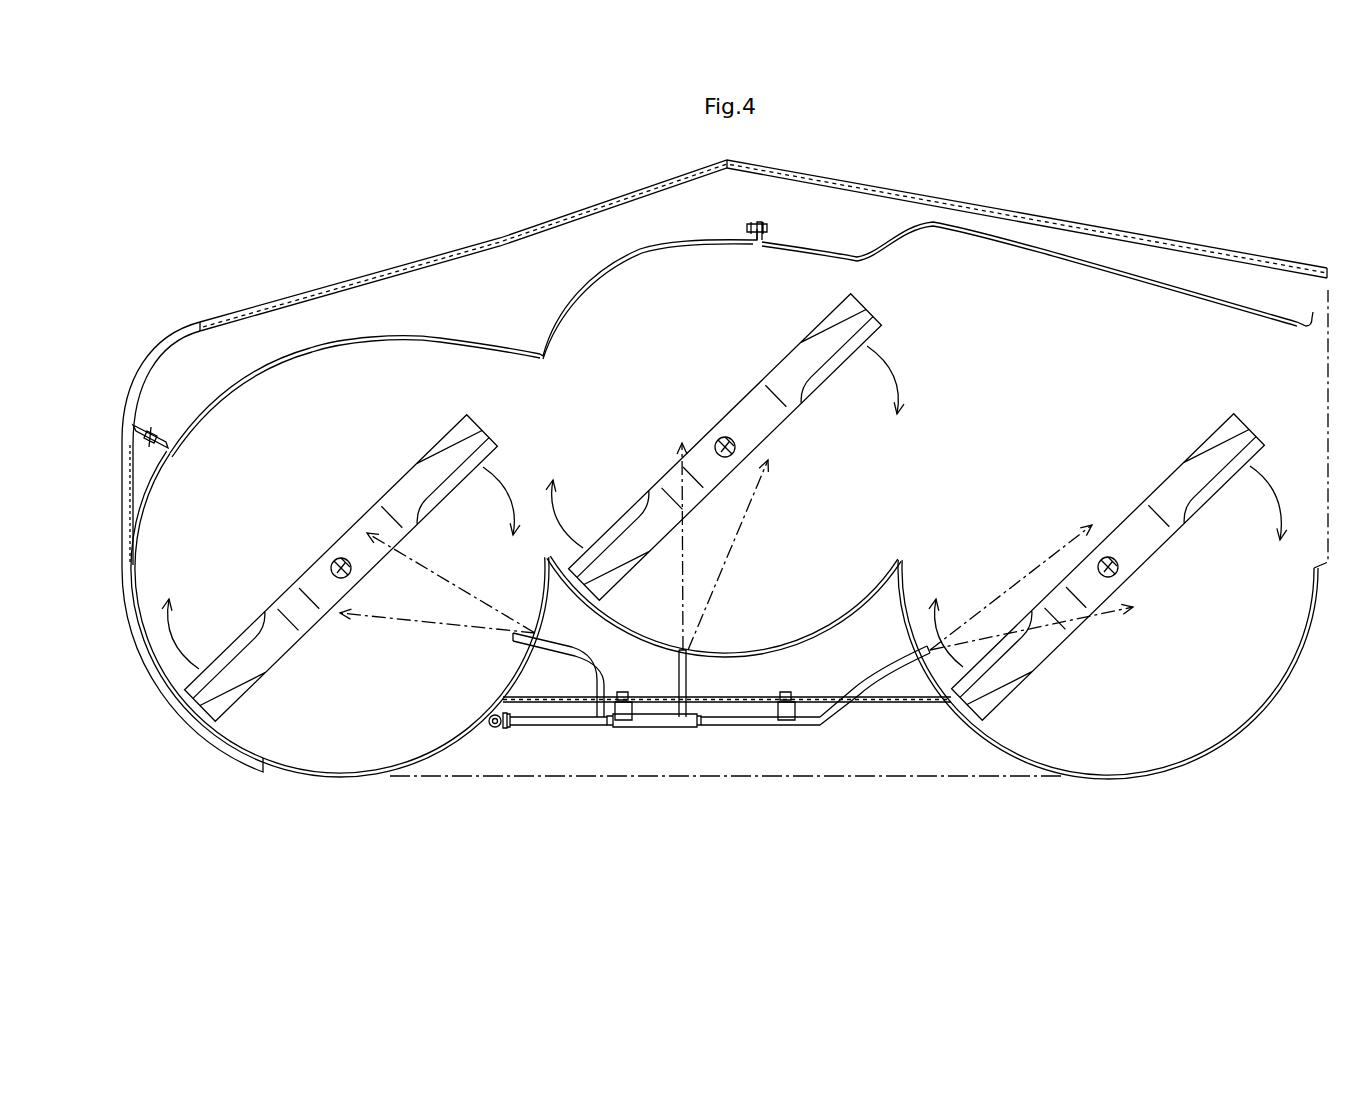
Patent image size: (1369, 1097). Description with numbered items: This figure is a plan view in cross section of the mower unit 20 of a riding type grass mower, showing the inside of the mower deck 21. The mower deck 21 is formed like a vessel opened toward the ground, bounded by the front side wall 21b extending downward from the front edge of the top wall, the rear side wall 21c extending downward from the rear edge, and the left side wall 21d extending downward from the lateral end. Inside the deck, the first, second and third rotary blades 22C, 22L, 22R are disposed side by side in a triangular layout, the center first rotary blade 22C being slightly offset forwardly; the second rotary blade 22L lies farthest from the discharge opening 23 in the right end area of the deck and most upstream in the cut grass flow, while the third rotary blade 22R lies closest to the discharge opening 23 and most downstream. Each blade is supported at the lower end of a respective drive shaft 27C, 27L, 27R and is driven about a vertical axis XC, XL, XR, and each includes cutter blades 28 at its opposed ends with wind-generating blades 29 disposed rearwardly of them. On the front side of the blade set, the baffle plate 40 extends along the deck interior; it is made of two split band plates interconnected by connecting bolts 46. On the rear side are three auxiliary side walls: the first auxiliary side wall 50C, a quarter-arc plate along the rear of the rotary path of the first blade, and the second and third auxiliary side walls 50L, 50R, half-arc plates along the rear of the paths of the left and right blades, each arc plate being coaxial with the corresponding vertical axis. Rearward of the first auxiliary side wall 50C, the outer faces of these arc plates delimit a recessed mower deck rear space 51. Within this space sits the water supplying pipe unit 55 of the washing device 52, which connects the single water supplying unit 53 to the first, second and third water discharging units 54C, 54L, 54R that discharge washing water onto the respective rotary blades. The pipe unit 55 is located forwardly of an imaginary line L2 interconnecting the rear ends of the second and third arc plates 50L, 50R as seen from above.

The mower unit 20 is at (360, 212).
The mower deck 21 is at (725, 459).
The front side wall 21b is at (608, 205).
The rear side wall 21c is at (932, 705).
The left side wall 21d is at (137, 545).
The second rotary blade 22L is at (280, 600).
The first rotary blade 22C is at (812, 405).
The third rotary blade 22R is at (1177, 538).
The discharge opening 23 is at (1325, 390).
The drive shaft 27L is at (338, 558).
The drive shaft 27C is at (722, 437).
The drive shaft 27R is at (1106, 557).
The cutter blades 28 is at (488, 480).
The wind-generating blades 29 is at (452, 433).
The baffle plate 40 is at (542, 355).
The connecting bolts 46 is at (165, 432).
The second auxiliary side wall 50L is at (283, 772).
The first auxiliary side wall 50C is at (829, 623).
The third auxiliary side wall 50R is at (1142, 776).
The mower deck rear space 51 is at (835, 682).
The washing device 52 is at (662, 731).
The water supplying unit 53 is at (495, 729).
The second water discharging unit 54L is at (523, 632).
The first water discharging unit 54C is at (697, 625).
The third water discharging unit 54R is at (892, 672).
The water supplying pipe unit 55 is at (739, 731).
The imaginary line L2 is at (683, 778).
The vertical axis XL is at (362, 575).
The vertical axis XC is at (725, 470).
The vertical axis XR is at (1133, 583).